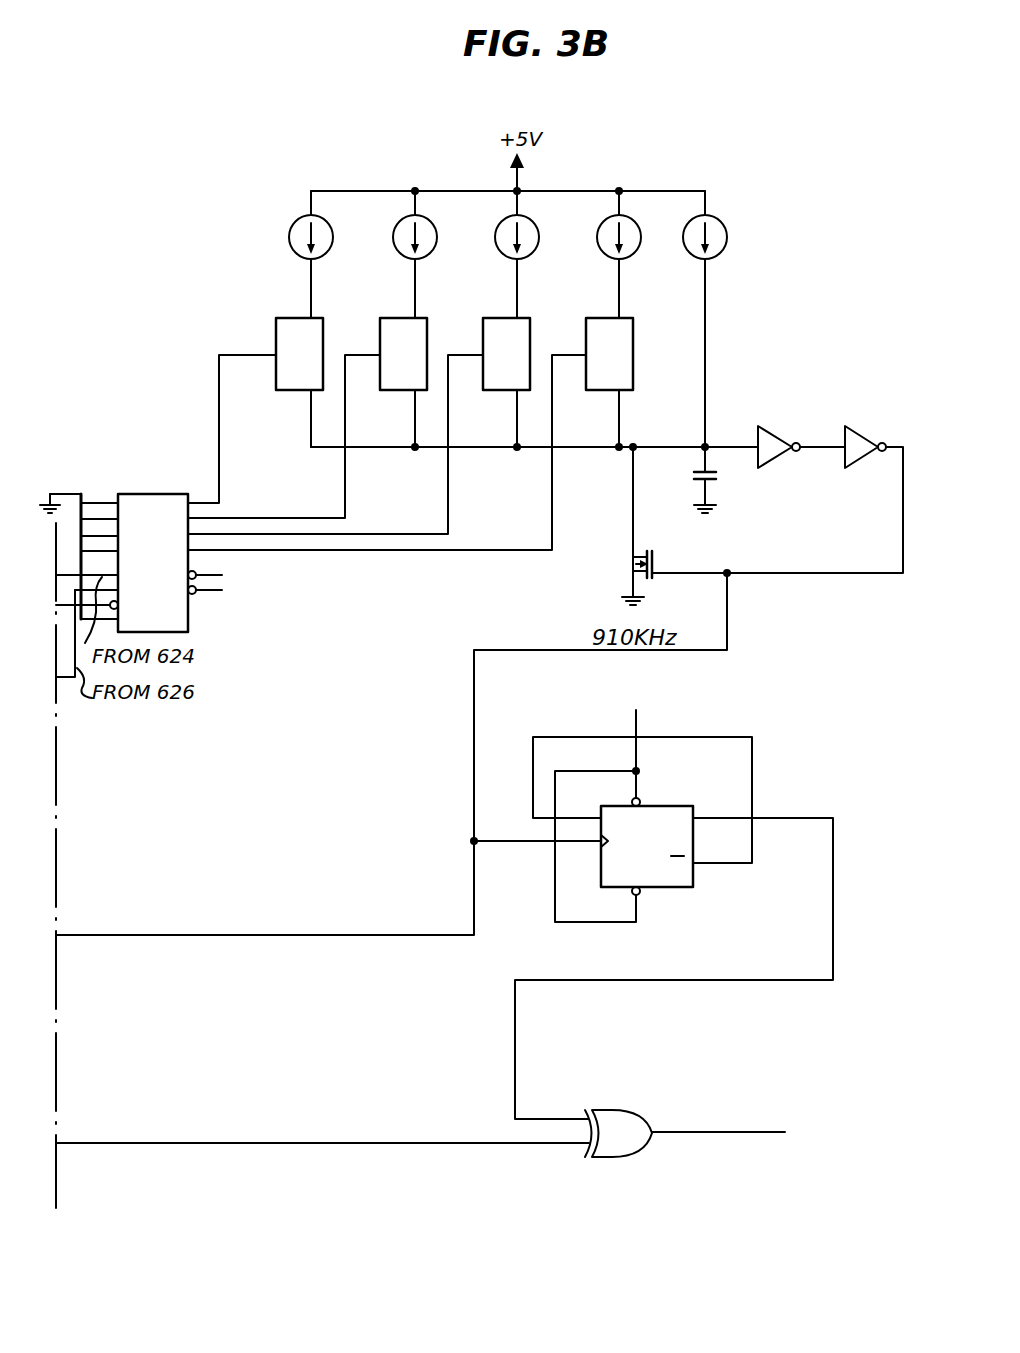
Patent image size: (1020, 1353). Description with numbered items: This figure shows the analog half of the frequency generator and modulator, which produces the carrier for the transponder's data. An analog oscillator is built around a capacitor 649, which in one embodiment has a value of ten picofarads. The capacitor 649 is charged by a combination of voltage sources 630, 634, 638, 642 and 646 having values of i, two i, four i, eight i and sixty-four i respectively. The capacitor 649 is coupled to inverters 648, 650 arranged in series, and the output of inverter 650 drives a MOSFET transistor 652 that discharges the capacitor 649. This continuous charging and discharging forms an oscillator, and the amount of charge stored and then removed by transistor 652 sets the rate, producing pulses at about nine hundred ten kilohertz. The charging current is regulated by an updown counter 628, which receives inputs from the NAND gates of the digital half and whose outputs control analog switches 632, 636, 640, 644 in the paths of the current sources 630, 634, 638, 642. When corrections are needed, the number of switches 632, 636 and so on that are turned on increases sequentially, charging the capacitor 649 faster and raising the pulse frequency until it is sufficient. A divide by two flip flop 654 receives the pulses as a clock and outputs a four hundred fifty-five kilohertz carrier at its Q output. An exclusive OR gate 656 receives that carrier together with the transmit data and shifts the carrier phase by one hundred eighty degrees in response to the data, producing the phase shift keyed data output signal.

The updown counter 628 is at (168, 484).
The voltage source 630 is at (318, 257).
The switch 632 is at (323, 333).
The voltage source 634 is at (422, 257).
The switch 636 is at (427, 333).
The voltage source 638 is at (524, 257).
The switch 640 is at (540, 332).
The voltage source 642 is at (626, 257).
The switch 644 is at (633, 353).
The voltage source 646 is at (712, 257).
The inverter 648 is at (787, 418).
The capacitor 649 is at (715, 478).
The inverter 650 is at (868, 418).
The MOSFET transistor 652 is at (652, 556).
The divide by 2 flip flop 654 is at (678, 798).
The exclusive OR gate 656 is at (637, 1097).